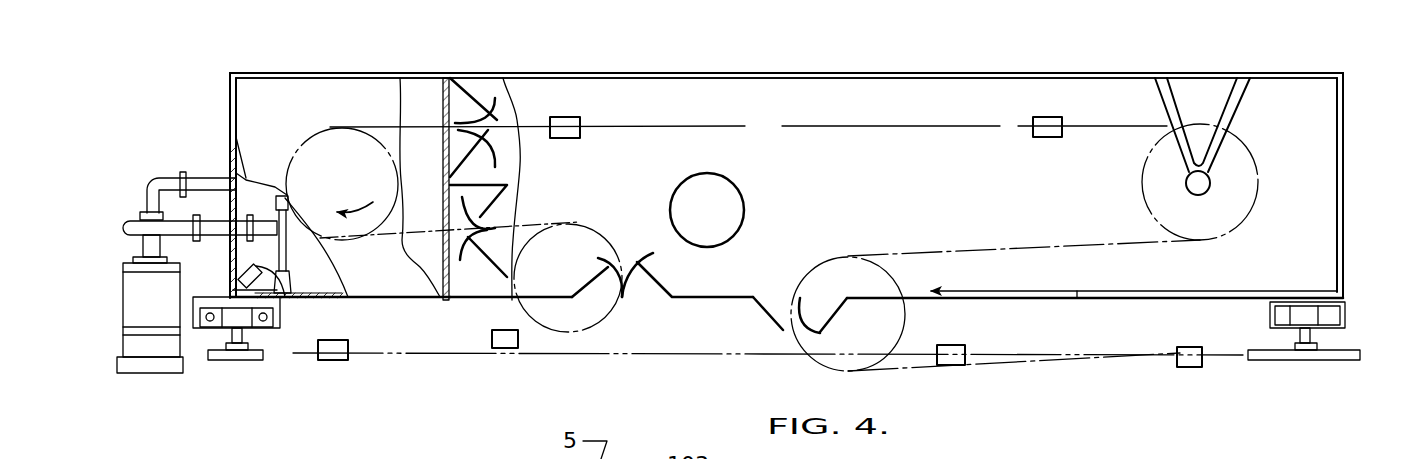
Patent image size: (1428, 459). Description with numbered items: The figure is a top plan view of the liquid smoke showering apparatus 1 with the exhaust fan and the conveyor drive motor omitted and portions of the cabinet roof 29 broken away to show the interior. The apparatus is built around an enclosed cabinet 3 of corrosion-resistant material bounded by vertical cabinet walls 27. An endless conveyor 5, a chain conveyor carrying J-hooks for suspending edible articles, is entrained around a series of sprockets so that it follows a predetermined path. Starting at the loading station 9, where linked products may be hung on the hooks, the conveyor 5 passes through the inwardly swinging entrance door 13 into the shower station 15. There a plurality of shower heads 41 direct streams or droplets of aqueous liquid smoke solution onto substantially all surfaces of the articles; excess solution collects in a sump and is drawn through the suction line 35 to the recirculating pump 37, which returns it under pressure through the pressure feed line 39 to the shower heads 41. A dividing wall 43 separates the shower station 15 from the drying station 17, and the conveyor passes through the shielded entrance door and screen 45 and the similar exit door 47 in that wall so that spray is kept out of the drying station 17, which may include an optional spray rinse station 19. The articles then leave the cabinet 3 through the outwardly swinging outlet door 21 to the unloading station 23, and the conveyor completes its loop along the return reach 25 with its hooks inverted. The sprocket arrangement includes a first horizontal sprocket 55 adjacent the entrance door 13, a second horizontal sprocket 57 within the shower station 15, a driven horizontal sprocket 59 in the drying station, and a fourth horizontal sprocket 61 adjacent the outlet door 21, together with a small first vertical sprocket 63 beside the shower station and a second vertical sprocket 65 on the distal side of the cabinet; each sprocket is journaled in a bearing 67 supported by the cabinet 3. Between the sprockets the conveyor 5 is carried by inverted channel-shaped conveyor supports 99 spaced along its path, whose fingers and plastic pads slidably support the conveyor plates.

The liquid smoke showering apparatus 1 is at (1346, 68).
The enclosed cabinet 3 is at (1346, 261).
The endless conveyor 5 is at (1041, 110).
The loading station 9 is at (427, 347).
The entrance door 13 is at (638, 274).
The shower station 15 is at (256, 200).
The drying station 17 is at (728, 98).
The spray rinse station 19 is at (1042, 241).
The outlet door 21 is at (784, 332).
The unloading station 23 is at (1080, 363).
The return reach 25 is at (531, 361).
The cabinet walls 27 is at (868, 75).
The cabinet roof 29 is at (343, 100).
The suction line 35 is at (150, 179).
The recirculating pump 37 is at (118, 340).
The pressure feed line 39 is at (217, 238).
The shower heads 41 is at (270, 281).
The dividing wall 43 is at (443, 120).
The entrance door and screen 45 is at (500, 213).
The exit door 47 is at (495, 117).
The first horizontal sprocket 55 is at (605, 327).
The second horizontal sprocket 57 is at (332, 182).
The horizontal sprocket 59 is at (1262, 203).
The fourth horizontal sprocket 61 is at (848, 374).
The first vertical sprocket 63 is at (240, 366).
The second vertical sprocket 65 is at (1400, 335).
The bearing 67 is at (257, 334).
The conveyor supports 99 is at (345, 338).